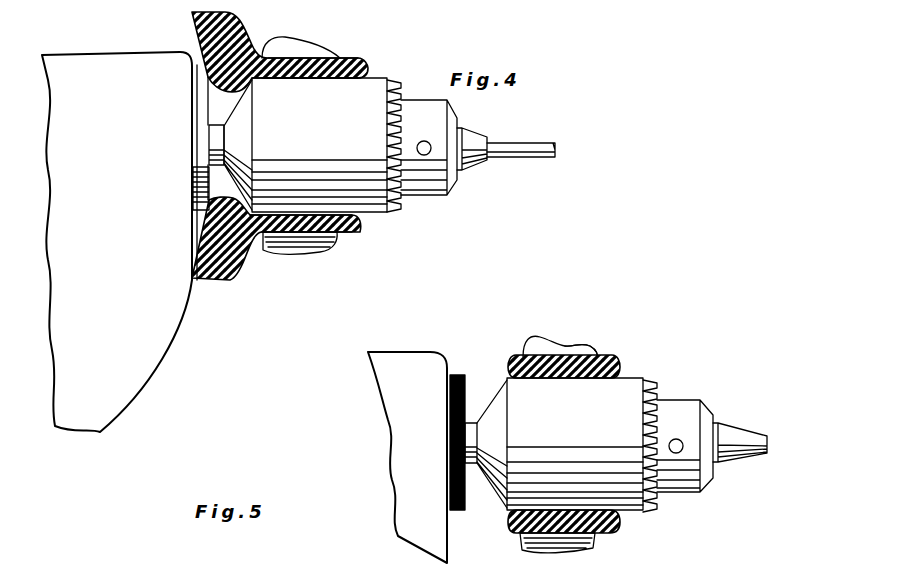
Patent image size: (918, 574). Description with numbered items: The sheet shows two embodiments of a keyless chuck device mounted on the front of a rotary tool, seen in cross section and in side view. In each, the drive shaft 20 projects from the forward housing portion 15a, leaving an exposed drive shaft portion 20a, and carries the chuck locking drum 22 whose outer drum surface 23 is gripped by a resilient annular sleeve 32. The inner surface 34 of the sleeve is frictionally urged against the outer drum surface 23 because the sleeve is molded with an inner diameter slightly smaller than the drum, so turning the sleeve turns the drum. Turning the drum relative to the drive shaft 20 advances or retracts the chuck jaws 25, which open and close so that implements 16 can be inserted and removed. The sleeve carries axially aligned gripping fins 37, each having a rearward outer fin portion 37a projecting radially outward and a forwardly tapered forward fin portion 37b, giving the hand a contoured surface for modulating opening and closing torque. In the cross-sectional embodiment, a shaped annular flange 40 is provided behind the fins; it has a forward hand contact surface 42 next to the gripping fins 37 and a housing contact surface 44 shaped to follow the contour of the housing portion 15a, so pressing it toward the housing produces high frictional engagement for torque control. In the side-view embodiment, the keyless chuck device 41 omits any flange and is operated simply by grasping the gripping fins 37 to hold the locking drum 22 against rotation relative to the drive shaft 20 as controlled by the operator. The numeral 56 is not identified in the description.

In FIG. 4, the forward housing portion 15a is at (197, 227).
In FIG. 5, the forward housing portion 15a is at (450, 428).
In FIG. 4, the implements 16 is at (510, 155).
In FIG. 4, the drive shaft 20 is at (216, 140).
In FIG. 5, the exposed drive shaft portion 20a is at (471, 427).
In FIG. 4, the chuck locking drum 22 is at (350, 188).
In FIG. 5, the chuck locking drum 22 is at (503, 512).
In FIG. 4, the outer drum surface 23 is at (300, 72).
In FIG. 5, the outer drum surface 23 is at (617, 488).
In FIG. 4, the chuck jaws 25 is at (476, 168).
In FIG. 5, the chuck jaws 25 is at (737, 428).
In FIG. 4, the annular sleeve 32 is at (347, 74).
In FIG. 5, the annular sleeve 32 is at (613, 362).
In FIG. 4, the inner surface 34 is at (348, 88).
In FIG. 5, the inner surface 34 is at (678, 446).
In FIG. 4, the gripping fins 37 is at (283, 252).
In FIG. 5, the outer fin portion 37a is at (537, 338).
In FIG. 5, the forward fin portion 37b is at (578, 350).
In FIG. 4, the shaped annular flange 40 is at (243, 263).
In FIG. 5, the keyless chuck device 41 is at (593, 333).
In FIG. 4, the forward hand contact surface 42 is at (238, 30).
In FIG. 4, the housing contact surface 44 is at (207, 50).
In FIG. 5, the housing wall 56 is at (431, 474).